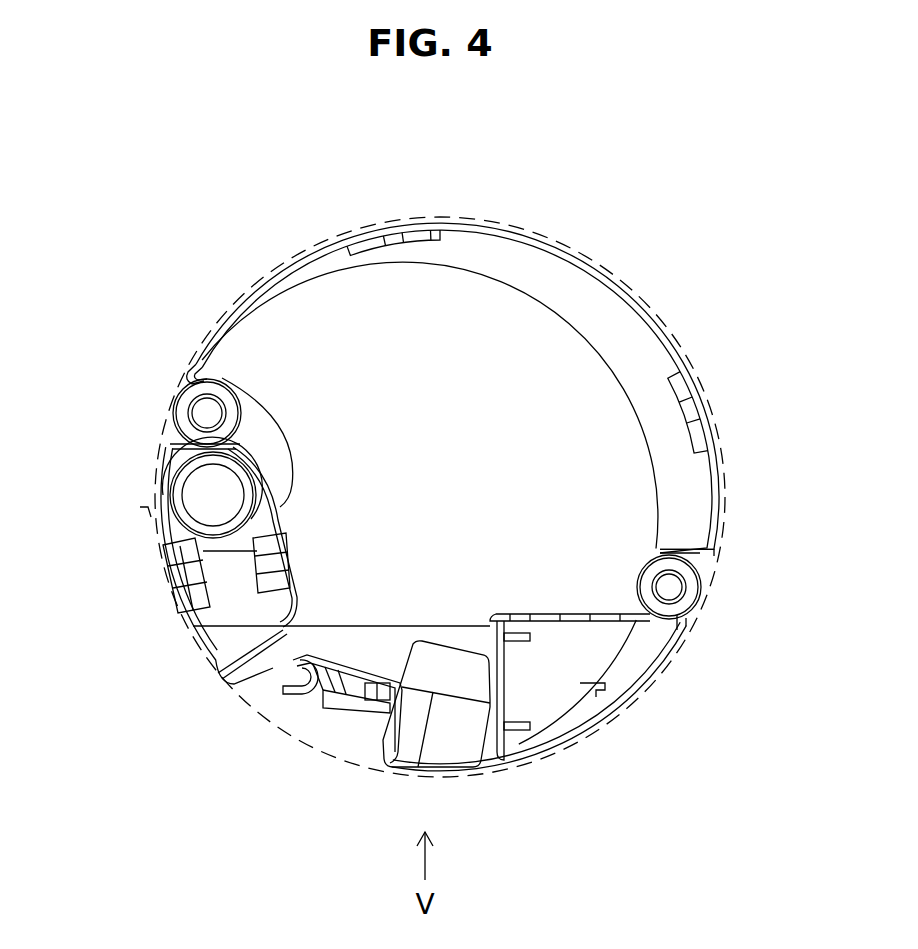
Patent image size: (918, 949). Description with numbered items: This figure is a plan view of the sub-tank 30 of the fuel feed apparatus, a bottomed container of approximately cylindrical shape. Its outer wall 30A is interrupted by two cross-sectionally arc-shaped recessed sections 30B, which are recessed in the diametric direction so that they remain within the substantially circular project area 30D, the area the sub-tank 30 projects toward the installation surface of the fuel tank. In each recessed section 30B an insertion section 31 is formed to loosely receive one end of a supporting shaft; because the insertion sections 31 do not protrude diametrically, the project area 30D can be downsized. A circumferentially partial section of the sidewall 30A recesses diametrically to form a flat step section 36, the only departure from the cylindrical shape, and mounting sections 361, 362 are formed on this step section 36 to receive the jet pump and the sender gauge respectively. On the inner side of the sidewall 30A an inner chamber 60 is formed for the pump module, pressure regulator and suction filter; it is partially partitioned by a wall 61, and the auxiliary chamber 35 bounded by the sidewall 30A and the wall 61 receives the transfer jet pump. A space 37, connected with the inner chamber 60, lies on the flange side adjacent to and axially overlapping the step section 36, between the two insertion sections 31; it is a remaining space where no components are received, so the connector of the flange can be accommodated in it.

The sub-tank 30 is at (664, 318).
The outer wall 30A is at (343, 236).
The recessed section 30B is at (172, 385).
The project area 30D is at (213, 312).
The insertion section 31 is at (204, 413).
The auxiliary chamber 35 is at (190, 640).
The step section 36 is at (347, 678).
The mounting section 361 is at (270, 690).
The mounting section 362 is at (373, 700).
The space 37 is at (452, 753).
The inner chamber 60 is at (288, 314).
The wall 61 is at (226, 380).